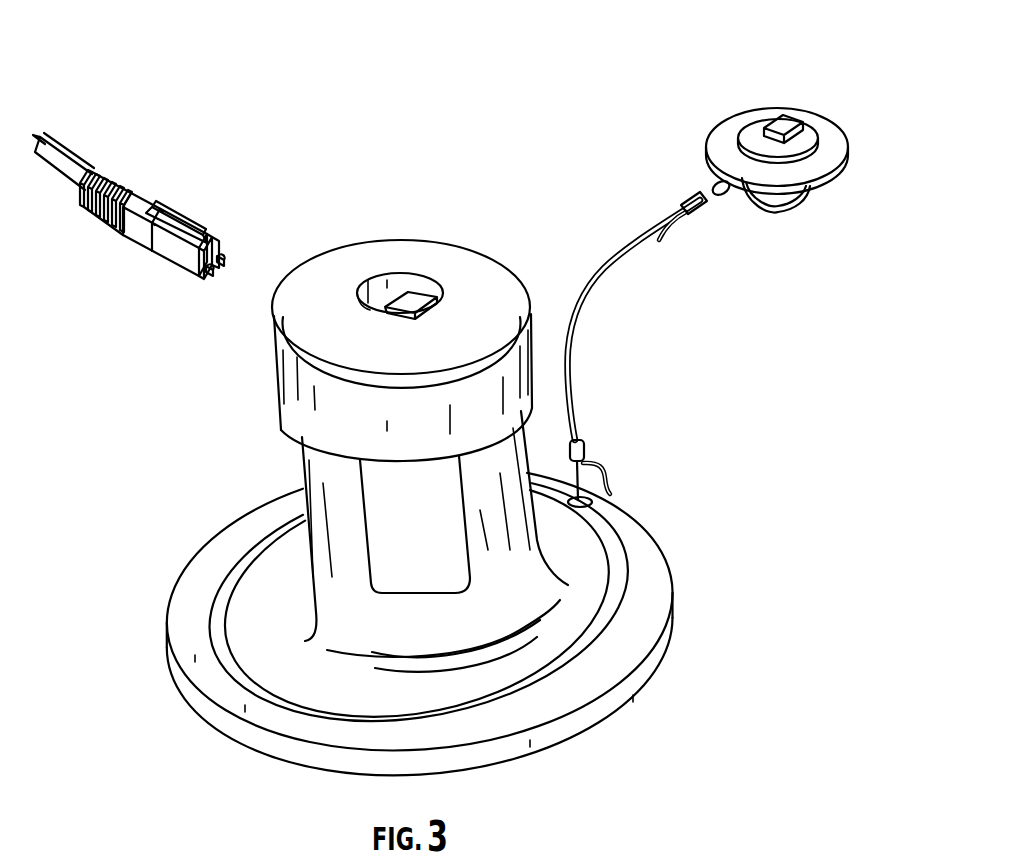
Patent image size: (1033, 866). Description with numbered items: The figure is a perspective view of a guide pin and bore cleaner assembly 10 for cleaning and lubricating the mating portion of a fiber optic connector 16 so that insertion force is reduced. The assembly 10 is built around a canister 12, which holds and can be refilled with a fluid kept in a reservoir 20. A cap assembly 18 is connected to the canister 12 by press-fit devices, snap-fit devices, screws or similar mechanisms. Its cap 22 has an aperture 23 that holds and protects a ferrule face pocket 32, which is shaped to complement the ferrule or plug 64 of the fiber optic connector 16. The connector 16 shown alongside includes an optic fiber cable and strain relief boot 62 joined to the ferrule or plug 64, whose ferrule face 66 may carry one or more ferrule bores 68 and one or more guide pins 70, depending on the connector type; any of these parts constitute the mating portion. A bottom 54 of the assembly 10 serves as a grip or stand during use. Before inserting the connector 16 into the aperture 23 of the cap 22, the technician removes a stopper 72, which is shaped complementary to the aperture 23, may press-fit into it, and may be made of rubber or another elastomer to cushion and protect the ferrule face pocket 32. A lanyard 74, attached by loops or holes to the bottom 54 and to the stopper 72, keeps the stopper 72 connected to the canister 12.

The guide pin and bore cleaner assembly 10 is at (650, 72).
The canister 12 is at (306, 466).
The fiber optic connector 16 is at (136, 117).
The cap assembly 18 is at (258, 372).
The reservoir 20 is at (417, 581).
The cap 22 is at (490, 262).
The aperture 23 is at (395, 289).
The ferrule face pocket 32 is at (420, 297).
The bottom 54 is at (186, 571).
The optic fiber cable and strain relief boot 62 is at (80, 210).
The ferrule or plug 64 is at (182, 263).
The ferrule face 66 is at (209, 231).
The ferrule bore 68 is at (207, 273).
The guide pin 70 is at (224, 263).
The stopper 72 is at (832, 175).
The lanyard 74 is at (574, 360).